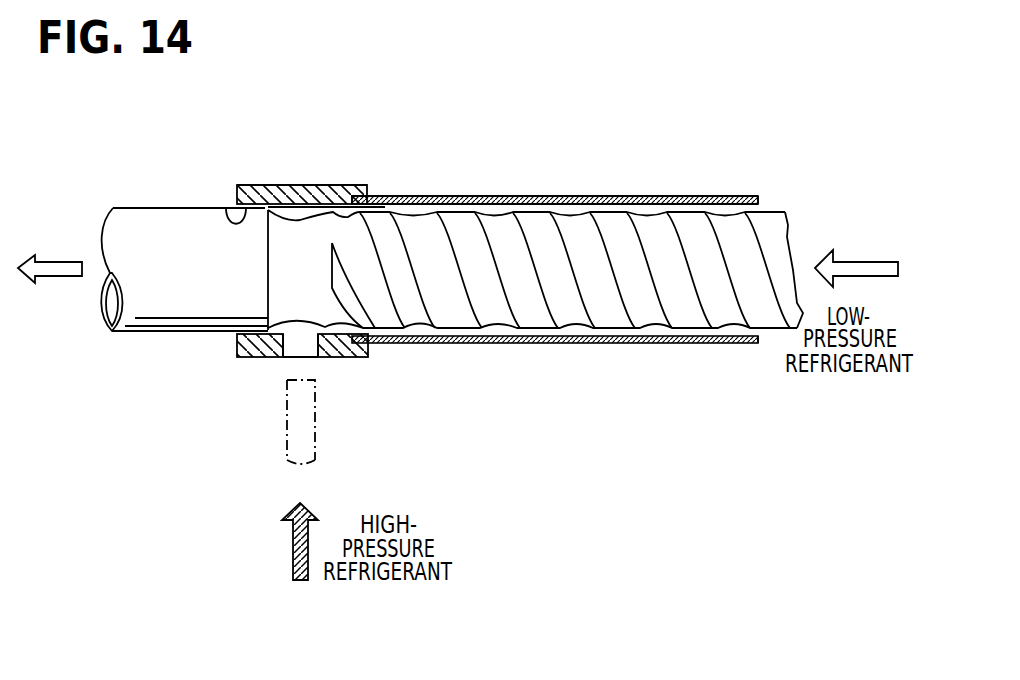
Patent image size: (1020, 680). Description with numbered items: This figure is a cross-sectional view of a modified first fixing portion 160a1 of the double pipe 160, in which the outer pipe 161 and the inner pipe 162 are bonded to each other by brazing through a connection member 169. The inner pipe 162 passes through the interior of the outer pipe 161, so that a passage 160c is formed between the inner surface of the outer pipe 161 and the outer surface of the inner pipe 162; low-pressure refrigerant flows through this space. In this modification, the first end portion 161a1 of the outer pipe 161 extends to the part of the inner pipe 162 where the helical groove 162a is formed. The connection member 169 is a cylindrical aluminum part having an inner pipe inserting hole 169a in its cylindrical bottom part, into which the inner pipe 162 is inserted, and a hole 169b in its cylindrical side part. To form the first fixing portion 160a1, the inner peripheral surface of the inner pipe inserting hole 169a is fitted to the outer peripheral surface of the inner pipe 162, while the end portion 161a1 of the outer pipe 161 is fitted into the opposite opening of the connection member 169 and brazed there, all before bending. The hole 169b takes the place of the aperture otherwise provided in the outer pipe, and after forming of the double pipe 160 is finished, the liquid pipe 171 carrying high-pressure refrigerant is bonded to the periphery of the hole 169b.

The double pipe 160 is at (522, 194).
The first fixing portion 160a1 is at (275, 184).
The passage 160c is at (604, 206).
The outer pipe 161 is at (411, 199).
The first end portion of the outer pipe 161a1 is at (360, 194).
The inner pipe 162 is at (177, 223).
The helical groove 162a is at (400, 307).
The connection member 169 is at (303, 195).
The inner pipe inserting hole 169a is at (237, 191).
The hole 169b is at (312, 348).
The liquid pipe 171 is at (283, 403).